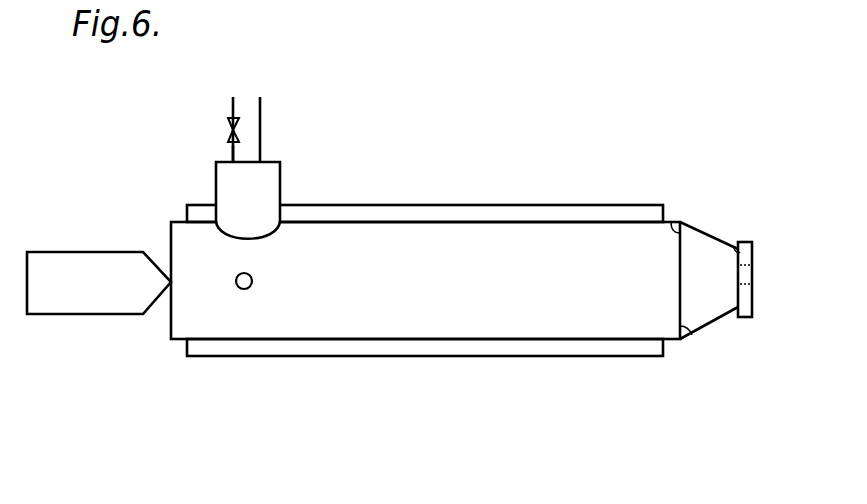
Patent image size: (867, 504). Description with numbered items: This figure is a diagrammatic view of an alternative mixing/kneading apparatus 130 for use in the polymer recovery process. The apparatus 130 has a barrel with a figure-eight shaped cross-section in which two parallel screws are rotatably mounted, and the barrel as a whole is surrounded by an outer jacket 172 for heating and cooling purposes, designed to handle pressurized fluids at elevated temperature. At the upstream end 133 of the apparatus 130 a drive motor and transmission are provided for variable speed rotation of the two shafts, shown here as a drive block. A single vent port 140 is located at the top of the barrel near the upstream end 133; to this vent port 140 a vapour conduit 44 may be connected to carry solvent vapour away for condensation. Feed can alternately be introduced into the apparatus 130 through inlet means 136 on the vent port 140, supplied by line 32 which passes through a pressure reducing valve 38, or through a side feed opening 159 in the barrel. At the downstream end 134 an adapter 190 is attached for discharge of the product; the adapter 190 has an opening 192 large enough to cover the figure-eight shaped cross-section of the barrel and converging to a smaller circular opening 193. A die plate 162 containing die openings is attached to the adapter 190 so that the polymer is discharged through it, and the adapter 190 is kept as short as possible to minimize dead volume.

The line 32 is at (233, 97).
The pressure reducing valve 38 is at (230, 133).
The vapour conduit 44 is at (260, 103).
The apparatus 130 is at (233, 315).
The upstream end 133 is at (170, 323).
The downstream end 134 is at (672, 220).
The inlet means 136 is at (233, 148).
The vent port 140 is at (281, 189).
The side feed opening 159 is at (251, 287).
The die plate 162 is at (752, 309).
The outer jacket 172 is at (467, 358).
The adapter 190 is at (721, 325).
The opening 192 is at (693, 338).
The circular opening 193 is at (733, 247).